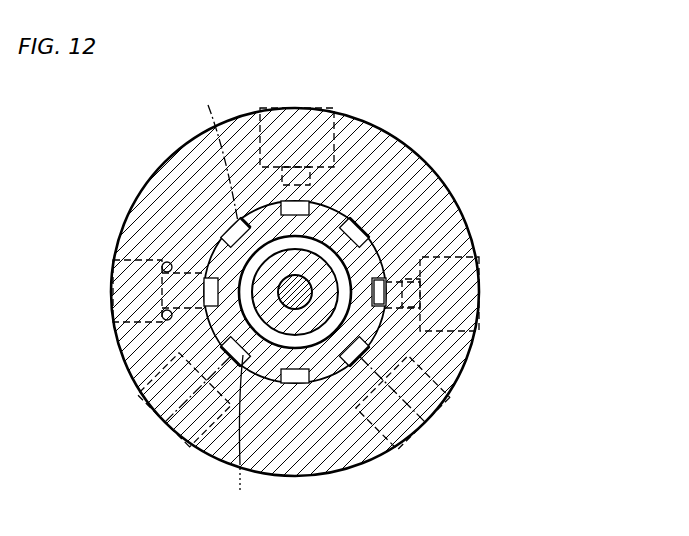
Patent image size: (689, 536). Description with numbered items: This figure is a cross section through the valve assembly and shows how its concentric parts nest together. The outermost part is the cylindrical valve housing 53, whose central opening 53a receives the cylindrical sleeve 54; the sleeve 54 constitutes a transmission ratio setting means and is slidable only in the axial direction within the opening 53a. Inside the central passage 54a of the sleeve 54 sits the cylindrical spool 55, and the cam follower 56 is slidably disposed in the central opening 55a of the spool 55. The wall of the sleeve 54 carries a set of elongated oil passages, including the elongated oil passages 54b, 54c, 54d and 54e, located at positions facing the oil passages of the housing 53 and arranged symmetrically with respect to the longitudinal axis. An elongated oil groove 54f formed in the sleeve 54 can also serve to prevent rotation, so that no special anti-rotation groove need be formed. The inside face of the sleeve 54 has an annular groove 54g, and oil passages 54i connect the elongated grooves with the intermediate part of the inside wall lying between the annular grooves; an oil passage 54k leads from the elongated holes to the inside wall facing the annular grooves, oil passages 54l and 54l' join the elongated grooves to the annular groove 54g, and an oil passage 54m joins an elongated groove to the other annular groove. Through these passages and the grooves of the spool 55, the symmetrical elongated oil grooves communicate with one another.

The cylindrical valve housing 53 is at (461, 137).
The central opening 53a is at (255, 220).
The cylindrical sleeve 54 is at (248, 246).
The central passage 54a is at (378, 256).
The elongated oil passage 54b is at (270, 210).
The elongated oil passage 54c is at (387, 299).
The elongated oil passage 54d is at (343, 360).
The elongated oil passage 54e is at (231, 340).
The elongated oil groove 54f is at (203, 295).
The annular groove 54g is at (349, 233).
The oil passage 54i is at (216, 299).
The oil passage 54k is at (385, 283).
The oil passage 54l is at (327, 389).
The oil passage 54l' is at (215, 213).
The oil passage 54m is at (123, 353).
The cylindrical spool 55 is at (242, 262).
The central opening 55a is at (378, 323).
The cam follower 56 is at (291, 373).